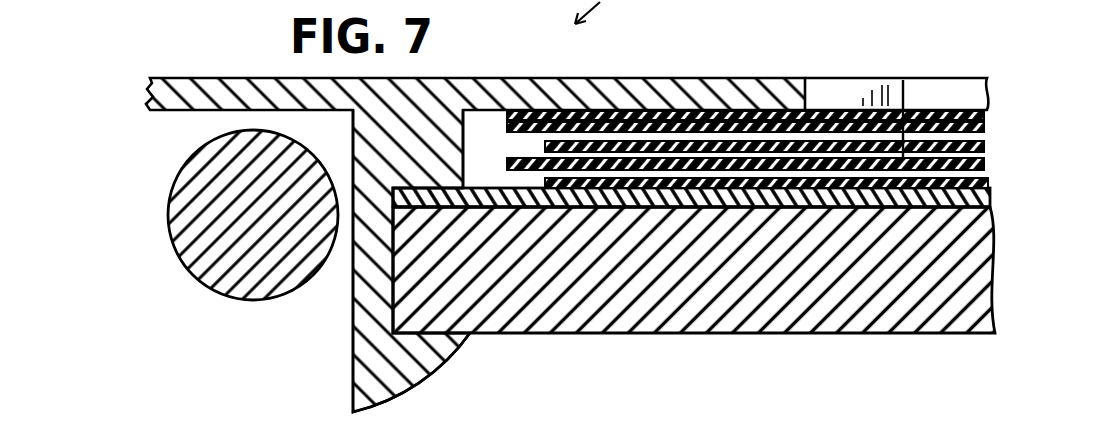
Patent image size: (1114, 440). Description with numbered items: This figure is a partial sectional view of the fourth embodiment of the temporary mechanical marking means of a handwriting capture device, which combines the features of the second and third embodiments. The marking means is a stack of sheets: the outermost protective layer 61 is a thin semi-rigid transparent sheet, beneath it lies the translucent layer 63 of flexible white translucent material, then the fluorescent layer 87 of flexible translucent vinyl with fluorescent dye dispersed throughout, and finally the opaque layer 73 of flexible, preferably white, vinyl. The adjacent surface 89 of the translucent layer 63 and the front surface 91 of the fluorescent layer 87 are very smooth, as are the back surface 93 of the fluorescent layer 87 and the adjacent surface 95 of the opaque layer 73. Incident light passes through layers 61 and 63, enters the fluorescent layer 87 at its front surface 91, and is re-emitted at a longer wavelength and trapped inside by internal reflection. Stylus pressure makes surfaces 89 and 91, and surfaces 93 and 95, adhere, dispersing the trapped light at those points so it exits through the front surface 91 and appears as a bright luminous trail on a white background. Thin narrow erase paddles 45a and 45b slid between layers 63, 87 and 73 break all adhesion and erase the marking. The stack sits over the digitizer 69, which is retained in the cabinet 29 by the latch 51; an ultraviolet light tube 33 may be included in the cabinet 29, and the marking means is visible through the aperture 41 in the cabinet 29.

The cabinet 29 is at (228, 78).
The ultraviolet light tube 33 is at (212, 291).
The aperture 41 is at (806, 95).
The latch 51 is at (431, 380).
The protective layer 61 is at (990, 114).
The translucent layer 63 is at (988, 128).
The erase paddle 45a is at (988, 147).
The fluorescent layer 87 is at (988, 163).
The erase paddle 45b is at (990, 181).
The opaque layer 73 is at (990, 198).
The digitizer 69 is at (996, 280).
The front surface 91 is at (903, 80).
The adjacent surface 95 is at (818, 208).
The adjacent surface 89 is at (525, 128).
The back surface 93 is at (525, 169).